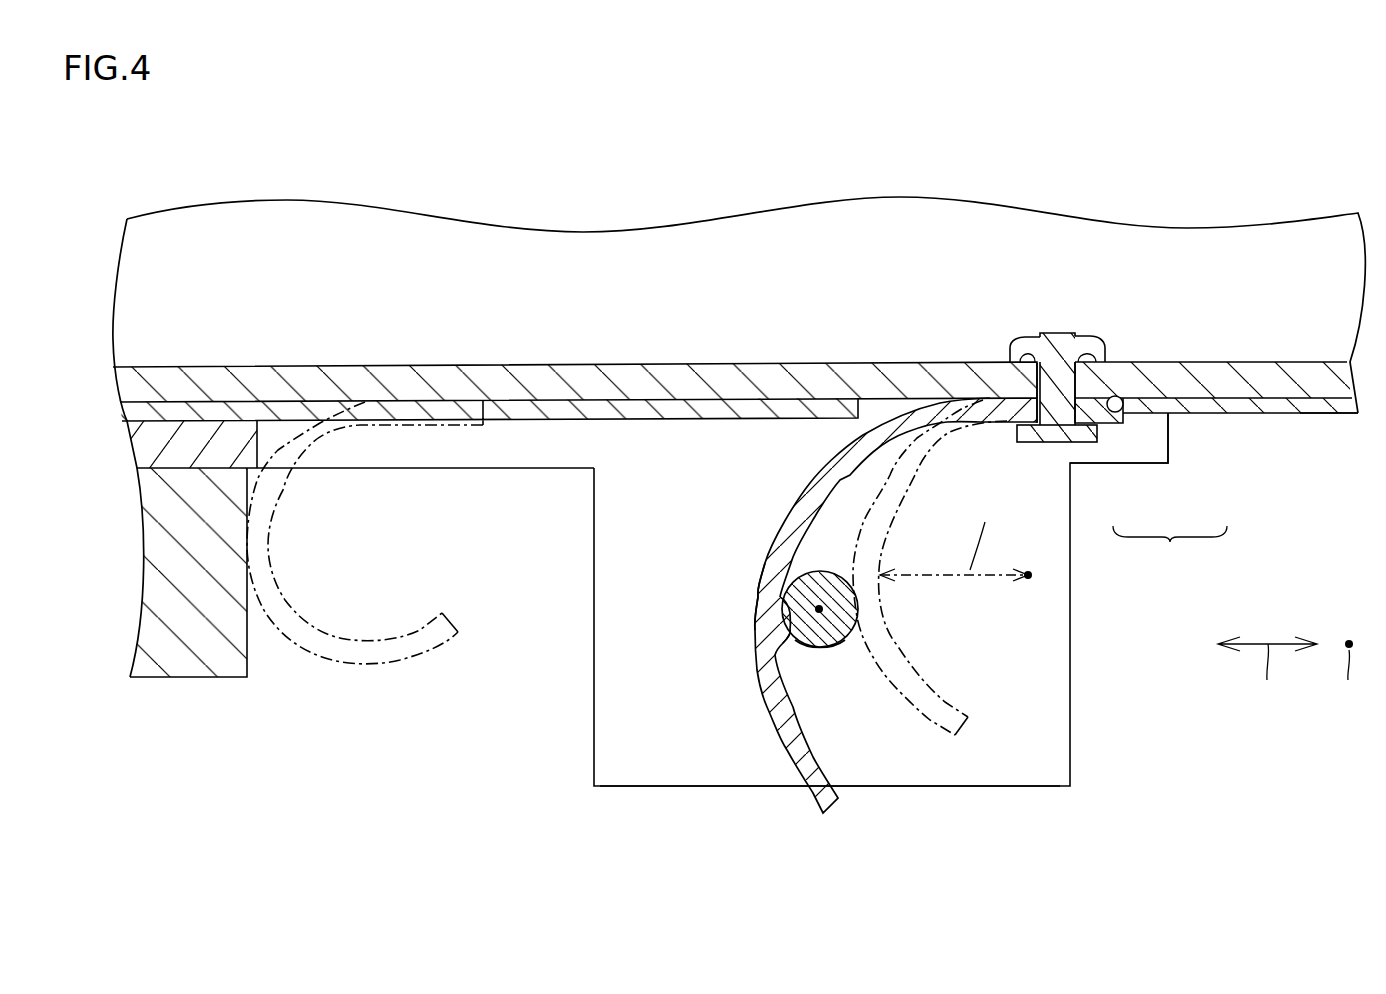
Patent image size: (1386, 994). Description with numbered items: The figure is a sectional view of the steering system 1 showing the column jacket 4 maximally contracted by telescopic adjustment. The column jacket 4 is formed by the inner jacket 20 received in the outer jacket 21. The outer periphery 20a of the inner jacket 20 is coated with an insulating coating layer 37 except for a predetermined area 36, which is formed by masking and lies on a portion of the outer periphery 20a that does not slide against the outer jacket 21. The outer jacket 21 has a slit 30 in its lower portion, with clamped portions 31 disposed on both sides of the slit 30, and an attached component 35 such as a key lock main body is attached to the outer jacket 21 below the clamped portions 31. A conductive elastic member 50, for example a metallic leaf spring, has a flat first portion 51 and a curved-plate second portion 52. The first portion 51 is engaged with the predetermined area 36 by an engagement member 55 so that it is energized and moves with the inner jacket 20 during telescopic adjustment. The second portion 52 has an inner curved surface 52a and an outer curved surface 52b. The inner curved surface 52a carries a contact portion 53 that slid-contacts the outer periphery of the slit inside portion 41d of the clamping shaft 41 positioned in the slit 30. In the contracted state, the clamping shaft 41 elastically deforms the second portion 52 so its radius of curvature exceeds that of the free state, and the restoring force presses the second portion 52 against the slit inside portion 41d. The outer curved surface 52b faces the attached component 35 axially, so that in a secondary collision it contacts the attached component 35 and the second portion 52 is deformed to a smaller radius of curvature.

The steering system 1 is at (765, 877).
The column jacket 4 is at (1216, 436).
The inner jacket 20 is at (1190, 383).
The outer periphery 20a is at (1233, 400).
The outer jacket 21 is at (1140, 450).
The slit 30 is at (1070, 723).
The clamped portions 31 is at (1070, 763).
The attached component 35 is at (190, 667).
The predetermined area 36 is at (1120, 397).
The coating layer 37 is at (1343, 407).
The clamping shaft 41 is at (840, 603).
The slit inside portion 41d is at (843, 627).
The elastic member 50 is at (642, 556).
The first portion 51 is at (1010, 410).
The second portion 52 is at (793, 520).
The inner curved surface 52a is at (782, 642).
The outer curved surface 52b is at (760, 595).
The contact portion 53 is at (798, 623).
The engagement member 55 is at (1033, 336).